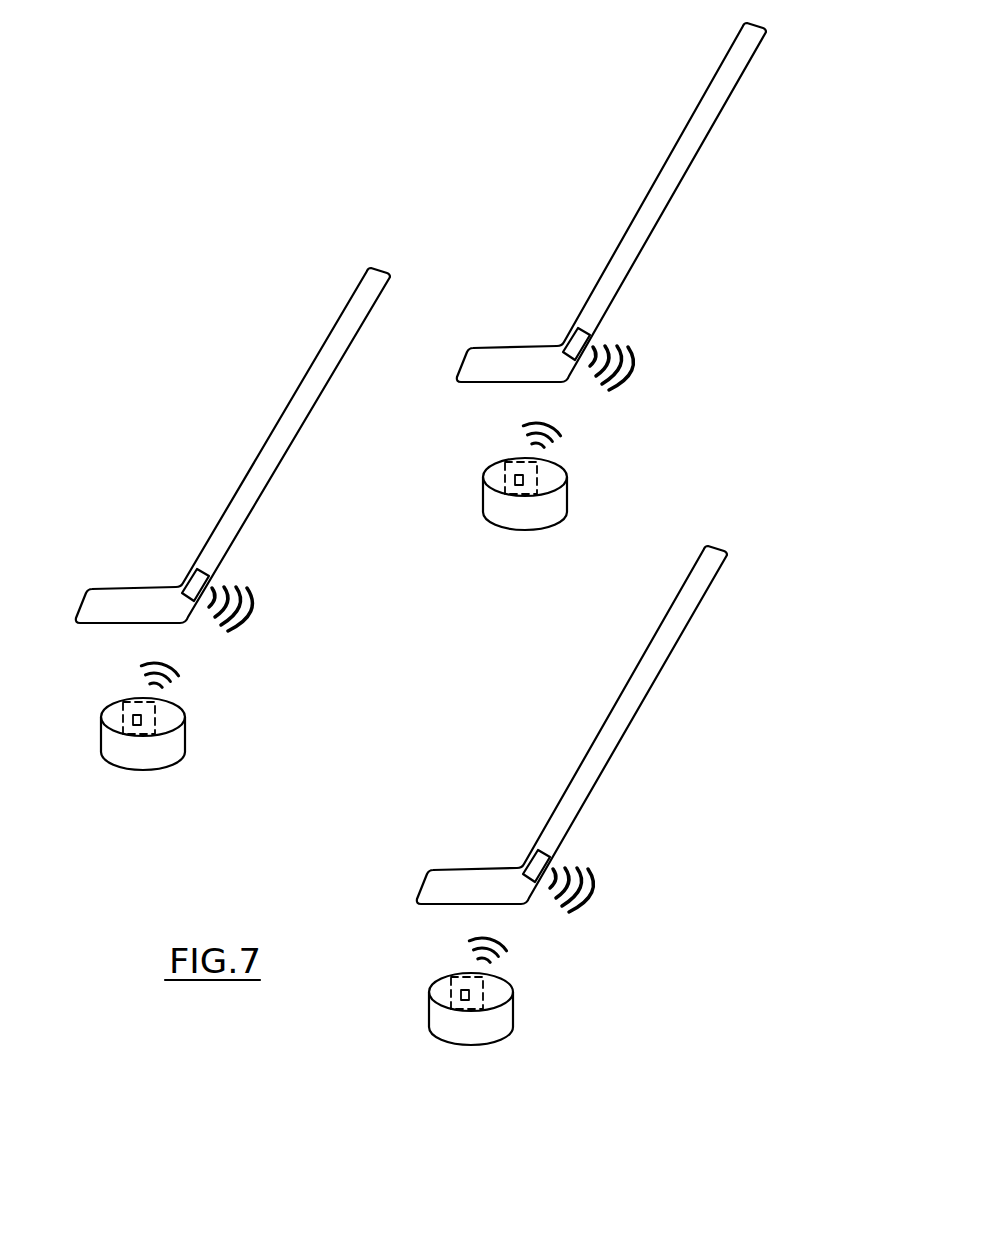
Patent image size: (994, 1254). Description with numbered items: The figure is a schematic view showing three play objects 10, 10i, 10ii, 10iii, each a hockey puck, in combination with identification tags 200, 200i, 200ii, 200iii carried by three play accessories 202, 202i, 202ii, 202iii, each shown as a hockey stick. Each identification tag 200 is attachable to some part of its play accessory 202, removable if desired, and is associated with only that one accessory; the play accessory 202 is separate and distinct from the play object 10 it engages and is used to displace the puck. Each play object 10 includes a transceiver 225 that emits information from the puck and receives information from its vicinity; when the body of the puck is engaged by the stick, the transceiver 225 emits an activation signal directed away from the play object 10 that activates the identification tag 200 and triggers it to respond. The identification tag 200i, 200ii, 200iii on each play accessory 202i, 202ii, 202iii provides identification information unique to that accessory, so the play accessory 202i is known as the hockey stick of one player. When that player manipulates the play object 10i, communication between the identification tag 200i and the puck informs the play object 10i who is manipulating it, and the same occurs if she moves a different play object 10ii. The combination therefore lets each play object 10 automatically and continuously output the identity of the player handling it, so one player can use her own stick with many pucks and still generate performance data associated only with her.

The play accessory 202 is at (468, 467).
The play accessory 202i is at (290, 422).
The play accessory 202ii is at (658, 640).
The play accessory 202iii is at (680, 162).
The identification tag 200 is at (435, 588).
The identification tag 200i is at (187, 568).
The identification tag 200ii is at (537, 860).
The identification tag 200iii is at (578, 338).
The play object 10 is at (297, 779).
The play object 10i is at (88, 786).
The play object 10ii is at (429, 1057).
The play object 10iii is at (465, 508).
The transceiver 225 is at (151, 724).